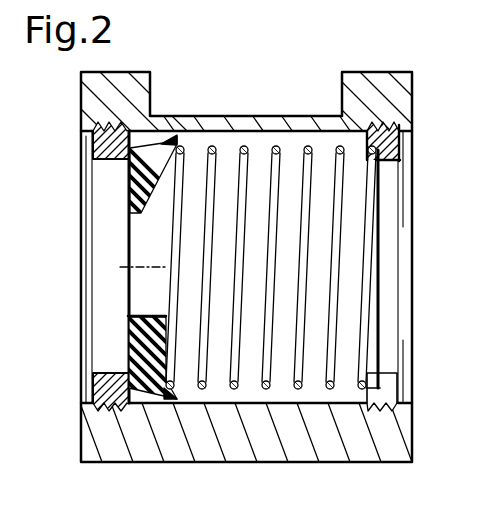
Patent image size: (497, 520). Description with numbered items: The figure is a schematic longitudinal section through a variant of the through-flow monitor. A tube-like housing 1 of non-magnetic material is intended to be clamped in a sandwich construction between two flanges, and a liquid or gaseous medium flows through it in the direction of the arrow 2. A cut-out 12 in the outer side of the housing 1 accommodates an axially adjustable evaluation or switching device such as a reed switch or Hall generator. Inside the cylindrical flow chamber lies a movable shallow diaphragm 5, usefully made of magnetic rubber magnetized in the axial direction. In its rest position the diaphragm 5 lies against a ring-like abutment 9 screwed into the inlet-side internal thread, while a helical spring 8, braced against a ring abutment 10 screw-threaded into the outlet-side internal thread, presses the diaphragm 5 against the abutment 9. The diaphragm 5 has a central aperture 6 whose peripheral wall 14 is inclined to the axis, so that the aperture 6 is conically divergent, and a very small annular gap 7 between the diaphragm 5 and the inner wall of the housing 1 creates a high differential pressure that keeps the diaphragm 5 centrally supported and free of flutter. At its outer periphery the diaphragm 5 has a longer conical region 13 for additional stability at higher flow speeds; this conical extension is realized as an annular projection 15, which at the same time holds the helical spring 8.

The housing 1 is at (371, 82).
The arrow 2 is at (105, 267).
The shallow diaphragm 5 is at (128, 349).
The central aperture 6 is at (142, 286).
The annular gap 7 is at (143, 400).
The helical spring 8 is at (279, 147).
The ring-like abutment 9 is at (100, 145).
The ring abutment 10 is at (397, 134).
The cut-out 12 is at (238, 103).
The conical region 13 is at (150, 137).
The peripheral wall 14 is at (147, 215).
The annular projection 15 is at (179, 398).